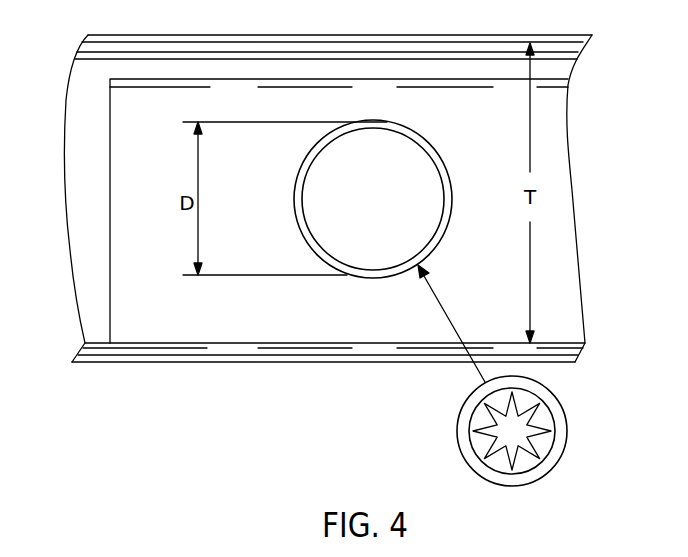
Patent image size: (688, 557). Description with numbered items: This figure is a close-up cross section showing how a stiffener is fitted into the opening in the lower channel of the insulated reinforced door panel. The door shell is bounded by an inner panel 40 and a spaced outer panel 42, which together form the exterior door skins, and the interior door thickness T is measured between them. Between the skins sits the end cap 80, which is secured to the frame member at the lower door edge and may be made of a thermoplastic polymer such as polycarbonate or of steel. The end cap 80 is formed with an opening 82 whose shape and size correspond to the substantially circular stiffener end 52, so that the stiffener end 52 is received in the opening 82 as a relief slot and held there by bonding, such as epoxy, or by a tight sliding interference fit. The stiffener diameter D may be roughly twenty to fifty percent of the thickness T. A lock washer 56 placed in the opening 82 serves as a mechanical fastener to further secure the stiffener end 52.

The inner panel 40 is at (482, 43).
The outer panel 42 is at (157, 362).
The stiffener end 52 is at (383, 125).
The lock washer 56 is at (568, 432).
The end cap 80 is at (118, 110).
The opening 82 is at (377, 278).